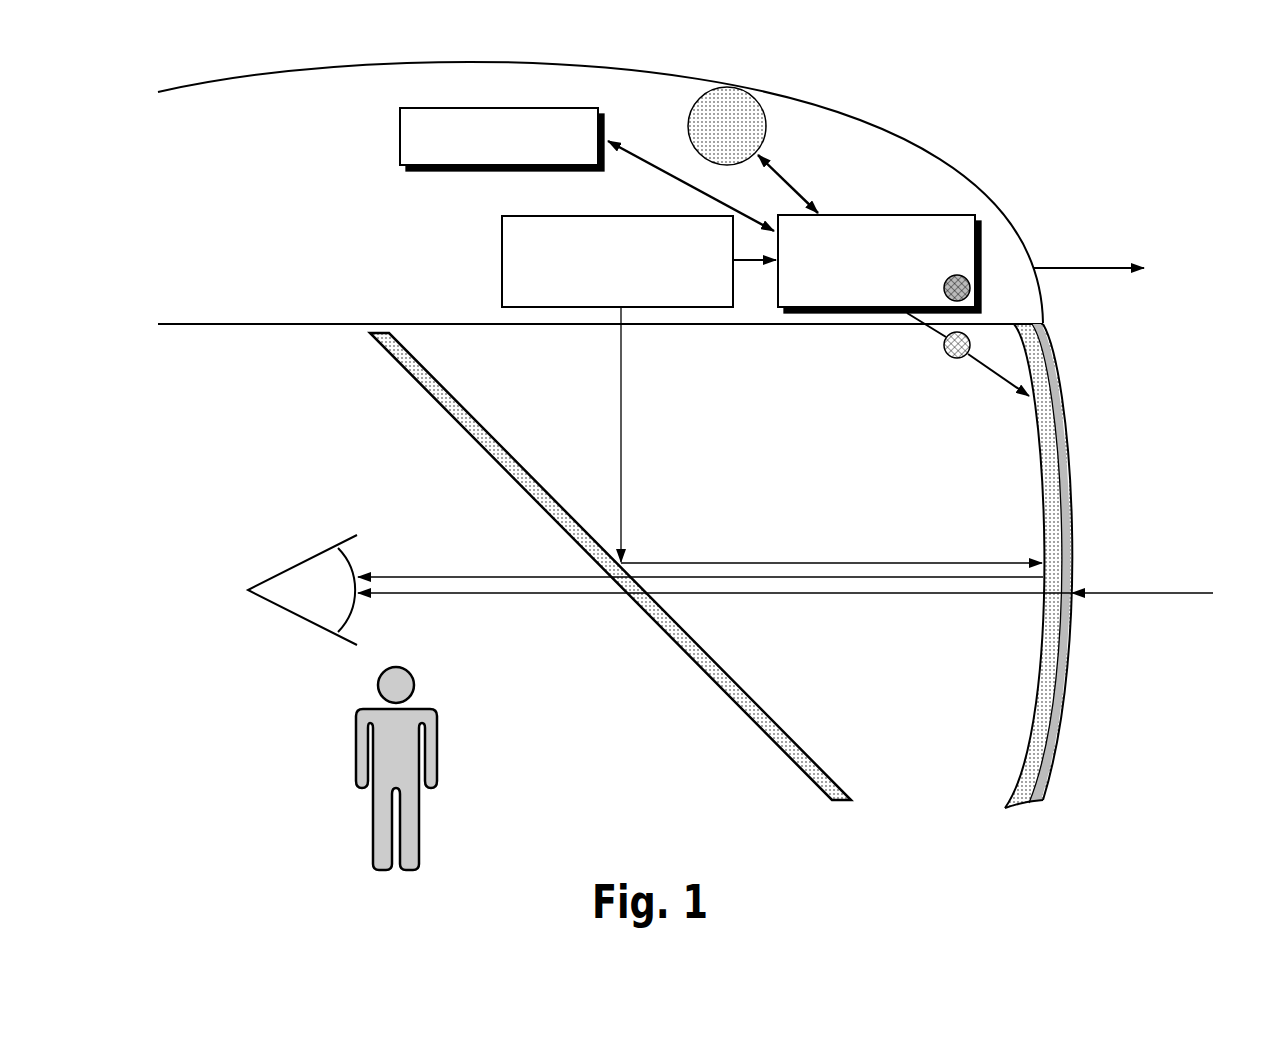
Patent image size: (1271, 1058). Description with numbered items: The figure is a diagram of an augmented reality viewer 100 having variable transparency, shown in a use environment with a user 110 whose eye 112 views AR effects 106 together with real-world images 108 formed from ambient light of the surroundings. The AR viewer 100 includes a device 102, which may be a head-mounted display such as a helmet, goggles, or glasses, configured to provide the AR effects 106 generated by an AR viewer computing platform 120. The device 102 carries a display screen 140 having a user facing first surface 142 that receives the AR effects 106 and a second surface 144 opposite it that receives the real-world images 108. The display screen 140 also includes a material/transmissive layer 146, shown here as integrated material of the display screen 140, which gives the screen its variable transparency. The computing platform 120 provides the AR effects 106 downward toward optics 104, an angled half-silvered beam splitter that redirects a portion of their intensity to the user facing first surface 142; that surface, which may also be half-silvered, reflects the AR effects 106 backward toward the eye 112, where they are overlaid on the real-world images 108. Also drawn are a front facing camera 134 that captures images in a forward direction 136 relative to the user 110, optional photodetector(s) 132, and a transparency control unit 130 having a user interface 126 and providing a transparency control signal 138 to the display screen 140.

The AR viewer 100 is at (1054, 120).
The device 102 is at (267, 235).
The optics 104 is at (496, 468).
The AR effects 106 is at (621, 408).
The real-world images 108 is at (1147, 590).
The user 110 is at (372, 822).
The eye 112 is at (280, 607).
The AR viewer computing platform 120 is at (502, 262).
The user interface 126 is at (944, 287).
The transparency control unit 130 is at (910, 215).
The photodetector(s) 132 is at (400, 128).
The front facing camera 134 is at (746, 138).
The forward direction 136 is at (1087, 267).
The transparency control signal 138 is at (942, 352).
The display screen 140 is at (1052, 566).
The user facing first surface 142 is at (1039, 536).
The second surface 144 is at (1069, 511).
The material/transmissive layer 146 is at (1056, 406).